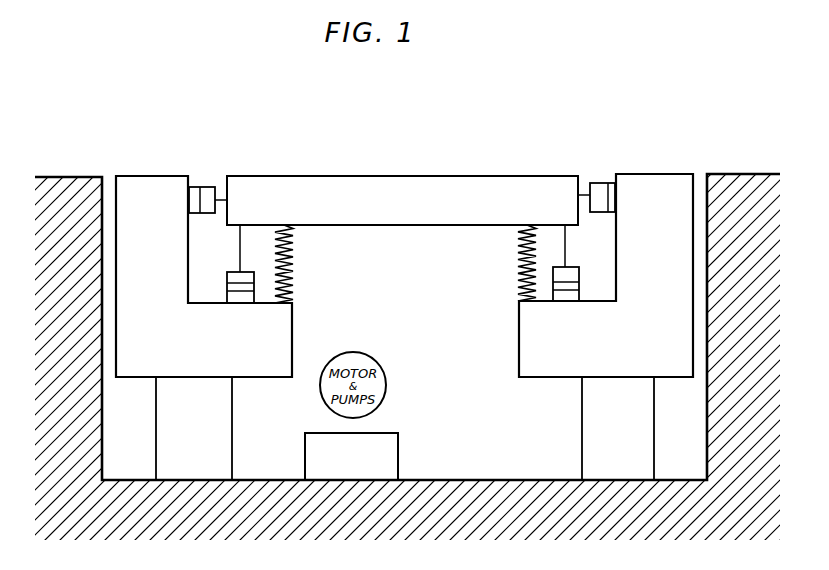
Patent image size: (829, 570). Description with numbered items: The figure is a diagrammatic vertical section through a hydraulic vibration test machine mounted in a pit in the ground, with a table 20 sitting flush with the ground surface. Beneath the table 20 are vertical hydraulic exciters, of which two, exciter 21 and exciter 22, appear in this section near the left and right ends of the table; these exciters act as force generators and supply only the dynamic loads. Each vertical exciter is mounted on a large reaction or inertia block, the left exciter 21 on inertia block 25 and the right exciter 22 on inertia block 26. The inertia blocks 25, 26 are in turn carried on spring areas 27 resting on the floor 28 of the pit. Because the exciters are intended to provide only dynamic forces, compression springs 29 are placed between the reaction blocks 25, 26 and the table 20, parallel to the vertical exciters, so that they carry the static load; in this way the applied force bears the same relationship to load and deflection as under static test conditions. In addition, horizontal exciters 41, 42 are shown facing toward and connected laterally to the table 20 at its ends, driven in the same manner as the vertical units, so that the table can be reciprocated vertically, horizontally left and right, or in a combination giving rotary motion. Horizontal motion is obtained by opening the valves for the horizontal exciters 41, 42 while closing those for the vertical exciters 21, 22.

The table 20 is at (394, 178).
The horizontal exciter 41 is at (204, 186).
The horizontal exciter 42 is at (603, 182).
The hydraulic exciter 21 is at (227, 276).
The hydraulic exciter 22 is at (578, 278).
The inertia block 25 is at (293, 319).
The inertia block 26 is at (519, 323).
The spring area 27 is at (212, 453).
The floor 28 is at (400, 490).
The compression spring 29 is at (519, 243).